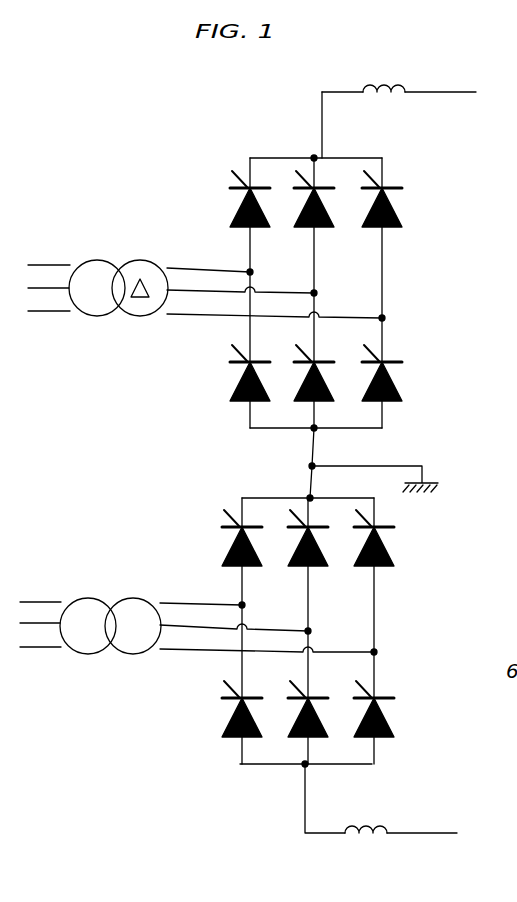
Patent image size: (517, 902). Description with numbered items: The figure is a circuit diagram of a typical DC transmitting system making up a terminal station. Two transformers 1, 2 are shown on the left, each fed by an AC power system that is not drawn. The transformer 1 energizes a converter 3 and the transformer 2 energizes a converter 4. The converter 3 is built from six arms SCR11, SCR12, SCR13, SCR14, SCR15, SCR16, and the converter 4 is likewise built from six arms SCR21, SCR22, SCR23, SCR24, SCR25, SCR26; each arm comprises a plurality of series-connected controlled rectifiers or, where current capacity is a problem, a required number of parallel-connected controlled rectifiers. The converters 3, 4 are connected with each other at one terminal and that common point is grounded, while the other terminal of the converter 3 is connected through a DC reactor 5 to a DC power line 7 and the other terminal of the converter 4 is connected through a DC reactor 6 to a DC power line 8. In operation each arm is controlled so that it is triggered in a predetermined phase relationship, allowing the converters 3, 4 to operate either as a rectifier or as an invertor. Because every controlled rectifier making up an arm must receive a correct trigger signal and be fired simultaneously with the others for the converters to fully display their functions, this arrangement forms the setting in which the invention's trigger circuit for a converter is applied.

The transformer 1 is at (119, 262).
The transformer 2 is at (110, 598).
The converter 3 is at (293, 293).
The converter 4 is at (281, 631).
The DC reactor 5 is at (390, 87).
The DC reactor 6 is at (372, 823).
The DC power line 7 is at (447, 92).
The DC power line 8 is at (423, 833).
The arm SCR11 is at (233, 213).
The arm SCR12 is at (229, 399).
The arm SCR13 is at (311, 228).
The arm SCR14 is at (297, 393).
The arm SCR15 is at (367, 225).
The arm SCR16 is at (363, 393).
The arm SCR21 is at (225, 551).
The arm SCR22 is at (222, 719).
The arm SCR23 is at (289, 555).
The arm SCR24 is at (287, 728).
The arm SCR25 is at (358, 555).
The arm SCR26 is at (352, 728).